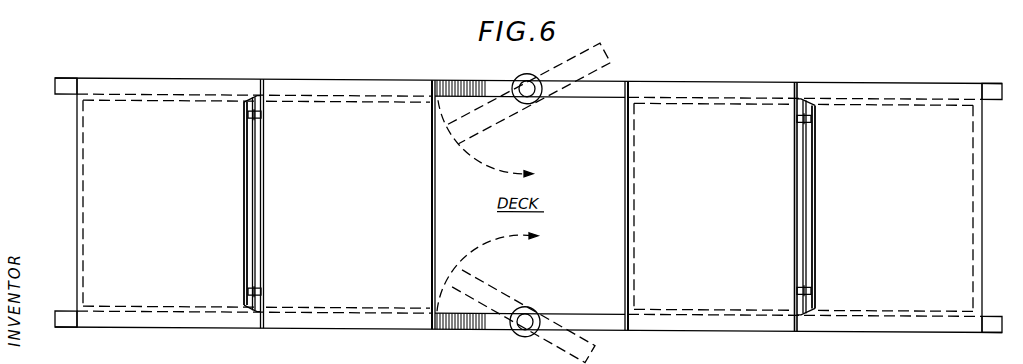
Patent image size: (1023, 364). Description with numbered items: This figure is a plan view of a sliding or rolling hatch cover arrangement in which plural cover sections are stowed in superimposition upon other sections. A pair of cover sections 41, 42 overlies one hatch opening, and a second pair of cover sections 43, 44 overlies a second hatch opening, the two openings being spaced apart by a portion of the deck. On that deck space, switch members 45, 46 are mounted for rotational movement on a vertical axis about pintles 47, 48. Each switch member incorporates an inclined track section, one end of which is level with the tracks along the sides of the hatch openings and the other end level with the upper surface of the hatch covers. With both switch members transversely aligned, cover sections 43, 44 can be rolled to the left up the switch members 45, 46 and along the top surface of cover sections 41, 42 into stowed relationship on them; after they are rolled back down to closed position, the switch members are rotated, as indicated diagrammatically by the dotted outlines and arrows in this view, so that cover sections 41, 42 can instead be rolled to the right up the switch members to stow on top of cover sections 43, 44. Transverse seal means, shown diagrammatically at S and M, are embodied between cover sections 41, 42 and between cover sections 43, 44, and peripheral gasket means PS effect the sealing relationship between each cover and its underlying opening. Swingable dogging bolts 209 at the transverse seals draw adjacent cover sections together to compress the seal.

The cover section 41 is at (163, 212).
The cover section 42 is at (358, 212).
The cover section 43 is at (716, 214).
The cover section 44 is at (900, 215).
The switch member 45 is at (487, 321).
The switch member 46 is at (481, 80).
The pintle 47 is at (531, 307).
The pintle 48 is at (528, 100).
The swingable dogging bolt 209 is at (263, 115).
The peripheral gasket means PS is at (82, 152).
The transverse seal means M is at (247, 175).
The transverse seal means S is at (263, 190).